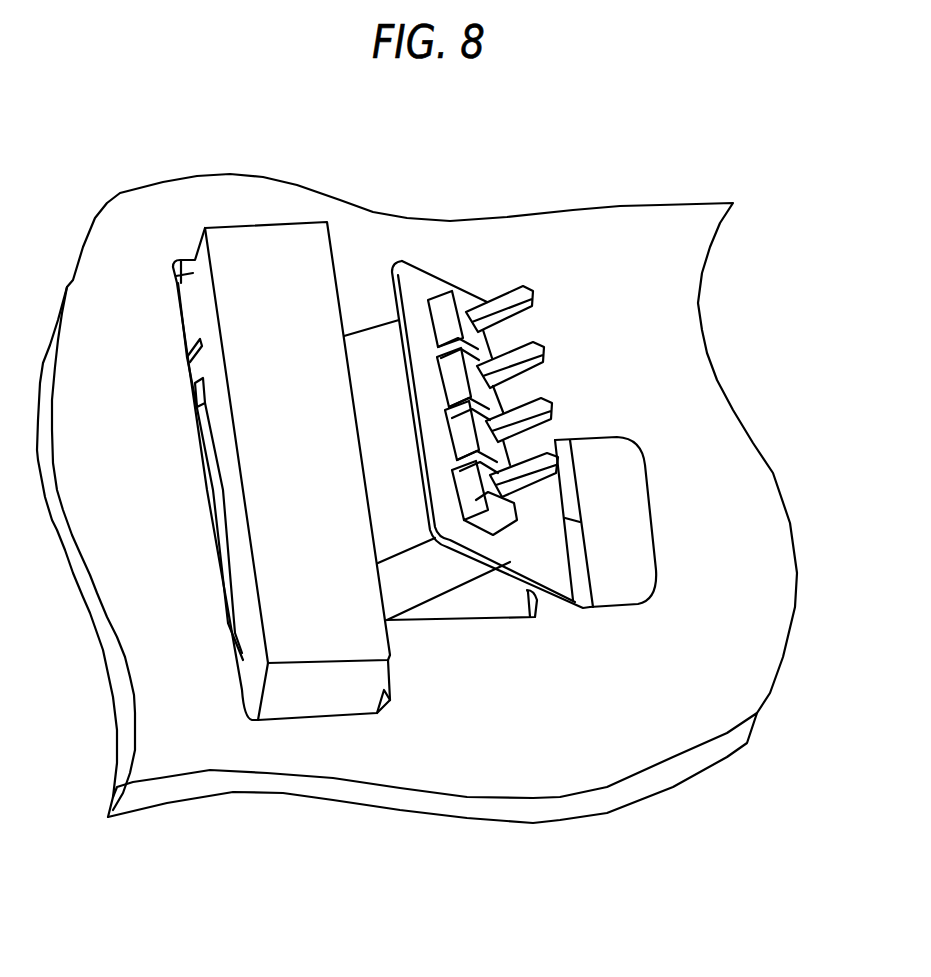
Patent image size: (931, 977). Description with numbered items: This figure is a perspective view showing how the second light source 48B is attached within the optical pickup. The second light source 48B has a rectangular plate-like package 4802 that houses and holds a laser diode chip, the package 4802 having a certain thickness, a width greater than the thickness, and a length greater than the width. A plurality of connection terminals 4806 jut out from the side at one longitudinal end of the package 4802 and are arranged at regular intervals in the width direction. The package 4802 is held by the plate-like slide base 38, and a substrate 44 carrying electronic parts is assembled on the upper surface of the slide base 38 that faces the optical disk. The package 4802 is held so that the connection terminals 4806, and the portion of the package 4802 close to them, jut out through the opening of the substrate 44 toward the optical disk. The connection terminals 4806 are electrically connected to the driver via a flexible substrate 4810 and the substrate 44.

The slide base 38 is at (493, 603).
The substrate 44 is at (730, 467).
The second light source 48B is at (370, 327).
The package 4802 is at (437, 575).
The connection terminals 4806 is at (547, 360).
The flexible substrate 4810 is at (547, 553).